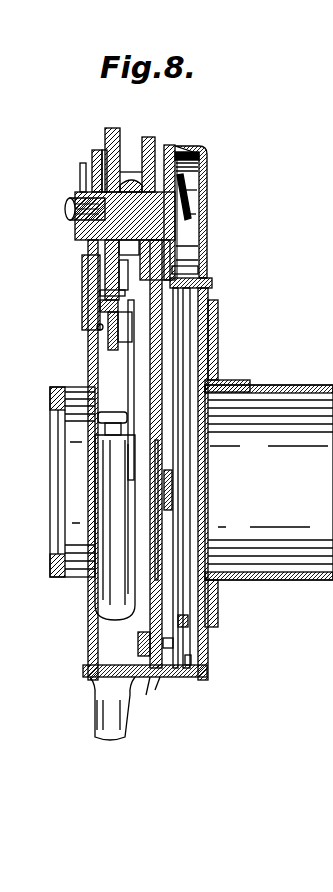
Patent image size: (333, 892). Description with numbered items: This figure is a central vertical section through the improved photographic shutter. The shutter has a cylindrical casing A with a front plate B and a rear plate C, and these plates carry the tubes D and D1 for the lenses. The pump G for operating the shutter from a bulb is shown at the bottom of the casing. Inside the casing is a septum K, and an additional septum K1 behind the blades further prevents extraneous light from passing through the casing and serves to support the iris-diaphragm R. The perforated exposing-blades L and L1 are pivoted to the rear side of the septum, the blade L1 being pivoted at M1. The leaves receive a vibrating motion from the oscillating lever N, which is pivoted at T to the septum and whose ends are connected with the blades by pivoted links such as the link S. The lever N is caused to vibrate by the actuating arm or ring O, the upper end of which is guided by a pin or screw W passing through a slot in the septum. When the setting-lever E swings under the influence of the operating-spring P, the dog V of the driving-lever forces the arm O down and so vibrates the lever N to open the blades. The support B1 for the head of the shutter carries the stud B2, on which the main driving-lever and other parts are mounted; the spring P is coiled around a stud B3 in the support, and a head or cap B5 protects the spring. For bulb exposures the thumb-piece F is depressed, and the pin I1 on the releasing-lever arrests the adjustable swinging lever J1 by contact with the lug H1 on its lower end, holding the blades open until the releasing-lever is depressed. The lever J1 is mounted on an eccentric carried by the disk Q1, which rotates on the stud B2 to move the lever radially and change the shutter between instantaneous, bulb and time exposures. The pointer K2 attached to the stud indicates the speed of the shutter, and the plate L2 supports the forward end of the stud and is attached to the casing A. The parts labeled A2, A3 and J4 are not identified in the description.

The cylindrical casing A is at (136, 735).
The valve seat A2 is at (138, 638).
The casing bottom A3 is at (150, 668).
The front plate B is at (88, 357).
The support for the head of the shutter B1 is at (170, 145).
The stud B2 is at (130, 183).
The stud B3 is at (198, 190).
The head or cap B5 is at (193, 148).
The rear plate C is at (185, 318).
The tube for the lens D is at (55, 477).
The tube for the lens D1 is at (269, 482).
The setting-lever E is at (148, 137).
The thumb-piece F is at (130, 368).
The pump G is at (56, 422).
The lug H1 is at (100, 296).
The pin I1 is at (97, 328).
The adjustable swinging lever J1 is at (82, 268).
The collar J4 is at (100, 310).
The septum K is at (192, 326).
The additional septum K1 is at (190, 668).
The pointer K2 is at (82, 168).
The perforated exposing-blade L is at (169, 693).
The perforated exposing-blade L1 is at (205, 290).
The plate L2 is at (100, 152).
The pivot of blade M1 is at (92, 162).
The oscillating lever N is at (175, 650).
The actuating arm or ring O is at (178, 352).
The operating-spring P is at (184, 178).
The disk Q1 is at (112, 128).
The iris-diaphragm R is at (220, 380).
The pivoted link S is at (162, 500).
The pivot of lever T is at (190, 636).
The dog V is at (178, 262).
The pin or screw W is at (205, 276).